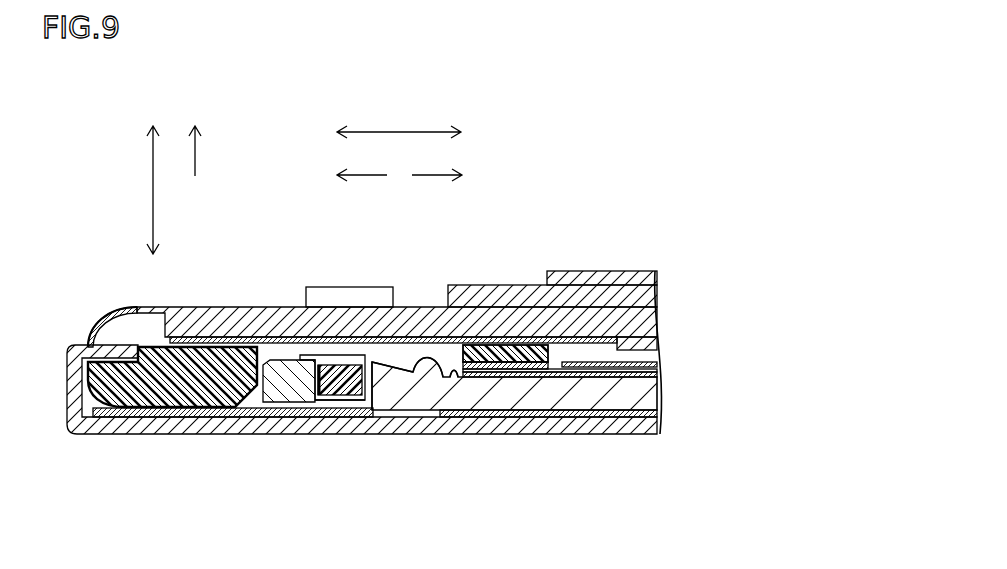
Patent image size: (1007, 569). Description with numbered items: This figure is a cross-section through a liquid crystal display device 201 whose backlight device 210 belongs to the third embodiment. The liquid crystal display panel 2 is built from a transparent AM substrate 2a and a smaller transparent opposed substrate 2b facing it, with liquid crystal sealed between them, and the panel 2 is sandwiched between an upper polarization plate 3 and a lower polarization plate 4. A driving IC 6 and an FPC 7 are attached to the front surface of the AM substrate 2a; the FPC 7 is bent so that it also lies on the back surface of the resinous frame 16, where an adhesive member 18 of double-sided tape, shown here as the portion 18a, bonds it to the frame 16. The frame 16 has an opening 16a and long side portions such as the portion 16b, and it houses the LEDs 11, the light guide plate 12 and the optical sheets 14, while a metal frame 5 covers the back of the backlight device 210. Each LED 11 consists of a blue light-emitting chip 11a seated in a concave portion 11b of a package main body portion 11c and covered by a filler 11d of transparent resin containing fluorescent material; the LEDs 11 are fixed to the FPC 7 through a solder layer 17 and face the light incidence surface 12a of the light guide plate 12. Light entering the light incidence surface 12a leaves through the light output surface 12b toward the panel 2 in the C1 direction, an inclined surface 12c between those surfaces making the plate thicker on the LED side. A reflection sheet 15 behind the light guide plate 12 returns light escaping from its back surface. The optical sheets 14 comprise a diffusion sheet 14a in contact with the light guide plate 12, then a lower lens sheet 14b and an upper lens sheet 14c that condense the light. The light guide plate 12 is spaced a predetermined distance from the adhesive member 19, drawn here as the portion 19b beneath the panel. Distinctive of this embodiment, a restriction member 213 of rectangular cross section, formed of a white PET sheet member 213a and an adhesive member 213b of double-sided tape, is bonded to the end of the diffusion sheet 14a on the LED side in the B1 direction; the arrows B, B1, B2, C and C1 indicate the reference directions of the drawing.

The liquid crystal display device 201 is at (704, 180).
The backlight device 210 is at (763, 332).
The liquid crystal display panel 2 is at (434, 307).
The AM substrate 2a is at (643, 322).
The opposed substrate 2b is at (643, 297).
The upper polarization plate 3 is at (645, 278).
The lower polarization plate 4 is at (650, 343).
The metal frame 5 is at (595, 433).
The driving IC 6 is at (361, 293).
The FPC 7 is at (119, 312).
The LEDs 11 is at (235, 486).
The blue light-emitting chip 11a is at (316, 388).
The concave portion 11b is at (376, 362).
The package main body portion 11c is at (283, 383).
The filler 11d is at (347, 375).
The light guide plate 12 is at (643, 395).
The light incidence surface 12a is at (378, 415).
The light output surface 12b is at (452, 372).
The inclined surface 12c is at (440, 378).
The optical sheets 14 is at (615, 368).
The diffusion sheet 14a is at (593, 387).
The lower lens sheet 14b is at (662, 368).
The upper lens sheet 14c is at (663, 363).
The reflection sheet 15 is at (662, 420).
The frame 16 is at (168, 384).
The opening 16a is at (266, 362).
The long side portion 16b is at (95, 395).
The solder layer 17 is at (355, 403).
The adhesive member 18 is at (233, 447).
The adhesive layer 18a is at (177, 412).
The adhesive member 19 is at (393, 296).
The sheet layer 19b is at (290, 337).
The restriction member 213 is at (443, 242).
The sheet member 213a is at (476, 345).
The adhesive member 213b is at (526, 362).
The direction B is at (399, 123).
The B1 direction B1 is at (362, 165).
The direction B2 is at (437, 165).
The direction C is at (161, 190).
The C1 direction C1 is at (210, 151).